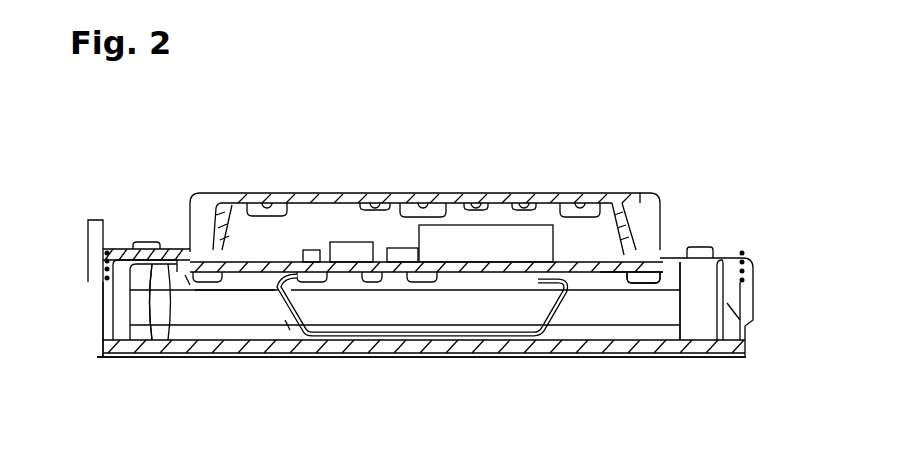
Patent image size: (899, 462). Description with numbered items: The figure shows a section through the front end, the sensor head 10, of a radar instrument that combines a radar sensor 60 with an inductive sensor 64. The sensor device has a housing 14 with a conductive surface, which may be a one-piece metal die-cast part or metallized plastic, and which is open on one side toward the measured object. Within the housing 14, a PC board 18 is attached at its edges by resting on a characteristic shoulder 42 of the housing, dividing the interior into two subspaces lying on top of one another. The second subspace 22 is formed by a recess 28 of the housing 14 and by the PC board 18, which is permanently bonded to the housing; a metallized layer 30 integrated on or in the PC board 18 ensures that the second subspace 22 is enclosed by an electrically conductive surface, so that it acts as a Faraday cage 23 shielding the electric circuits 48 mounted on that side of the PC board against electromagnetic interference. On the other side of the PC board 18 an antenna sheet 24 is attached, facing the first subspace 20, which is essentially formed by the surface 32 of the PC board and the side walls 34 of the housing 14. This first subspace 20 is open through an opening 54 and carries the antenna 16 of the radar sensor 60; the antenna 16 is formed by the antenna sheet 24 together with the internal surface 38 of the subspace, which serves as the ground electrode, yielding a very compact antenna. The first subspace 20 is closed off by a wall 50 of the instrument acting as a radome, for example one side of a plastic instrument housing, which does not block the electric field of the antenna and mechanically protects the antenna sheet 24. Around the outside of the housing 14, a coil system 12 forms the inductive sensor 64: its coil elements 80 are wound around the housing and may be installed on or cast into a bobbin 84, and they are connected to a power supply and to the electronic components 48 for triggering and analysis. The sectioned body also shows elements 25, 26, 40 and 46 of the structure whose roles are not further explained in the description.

The sensor head 10 is at (636, 179).
The coil system 12 is at (99, 263).
The housing 14 is at (265, 204).
The antenna 16 is at (178, 272).
The PC board 18 is at (605, 271).
The first subspace 20 is at (585, 314).
The second subspace 22 is at (267, 240).
The Faraday cage 23 is at (323, 217).
The antenna sheet 24 is at (397, 334).
The base plate layer 25 is at (450, 334).
The board support 26 is at (647, 277).
The recess 28 is at (505, 213).
The metallized layer 30 is at (175, 258).
The surface 32 is at (622, 285).
The side walls 34 is at (103, 307).
The internal surface 38 is at (152, 358).
The support post 40 is at (128, 287).
The shoulder 42 is at (630, 234).
The support post 46 is at (151, 302).
The electric circuits 48 is at (437, 217).
The wall 50 is at (103, 354).
The opening 54 is at (230, 312).
The radar sensor 60 is at (503, 314).
The inductive sensor 64 is at (755, 242).
The coil elements 80 is at (102, 280).
The bobbin 84 is at (88, 219).